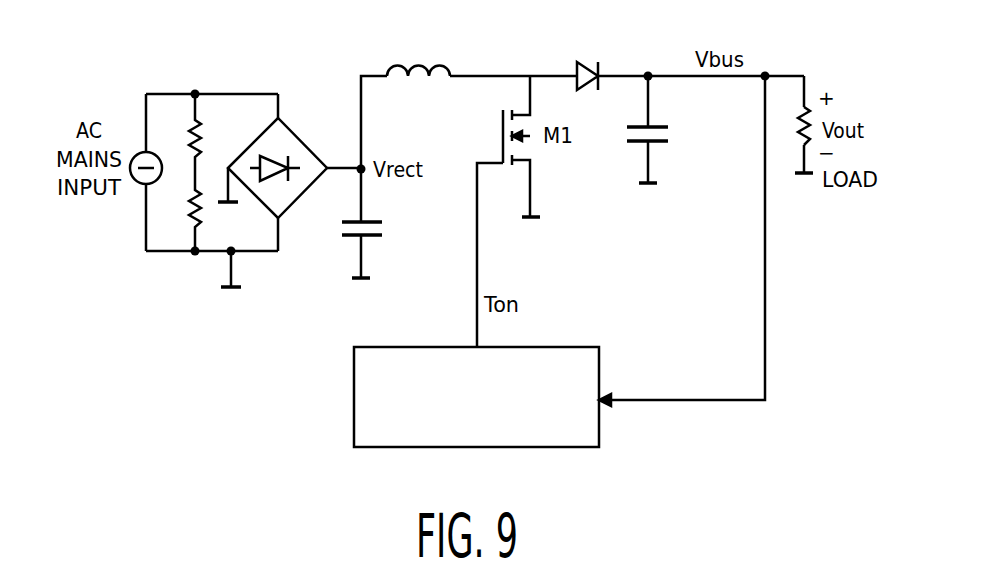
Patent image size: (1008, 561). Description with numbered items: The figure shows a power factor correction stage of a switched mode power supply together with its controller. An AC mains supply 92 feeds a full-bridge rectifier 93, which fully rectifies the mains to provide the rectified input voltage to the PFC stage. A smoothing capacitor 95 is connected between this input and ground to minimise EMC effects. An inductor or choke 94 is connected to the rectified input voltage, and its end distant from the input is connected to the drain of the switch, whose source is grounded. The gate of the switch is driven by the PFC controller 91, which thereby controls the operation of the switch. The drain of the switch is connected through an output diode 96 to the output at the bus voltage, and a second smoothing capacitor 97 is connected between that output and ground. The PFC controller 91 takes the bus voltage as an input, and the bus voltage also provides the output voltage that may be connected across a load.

The PFC controller 91 is at (490, 412).
The mains supply 92 is at (138, 154).
The full-bridge rectifier 93 is at (298, 130).
The inductor or choke 94 is at (410, 62).
The smoothing capacitor 95 is at (352, 238).
The output diode 96 is at (583, 62).
The second smoothing capacitor 97 is at (662, 143).